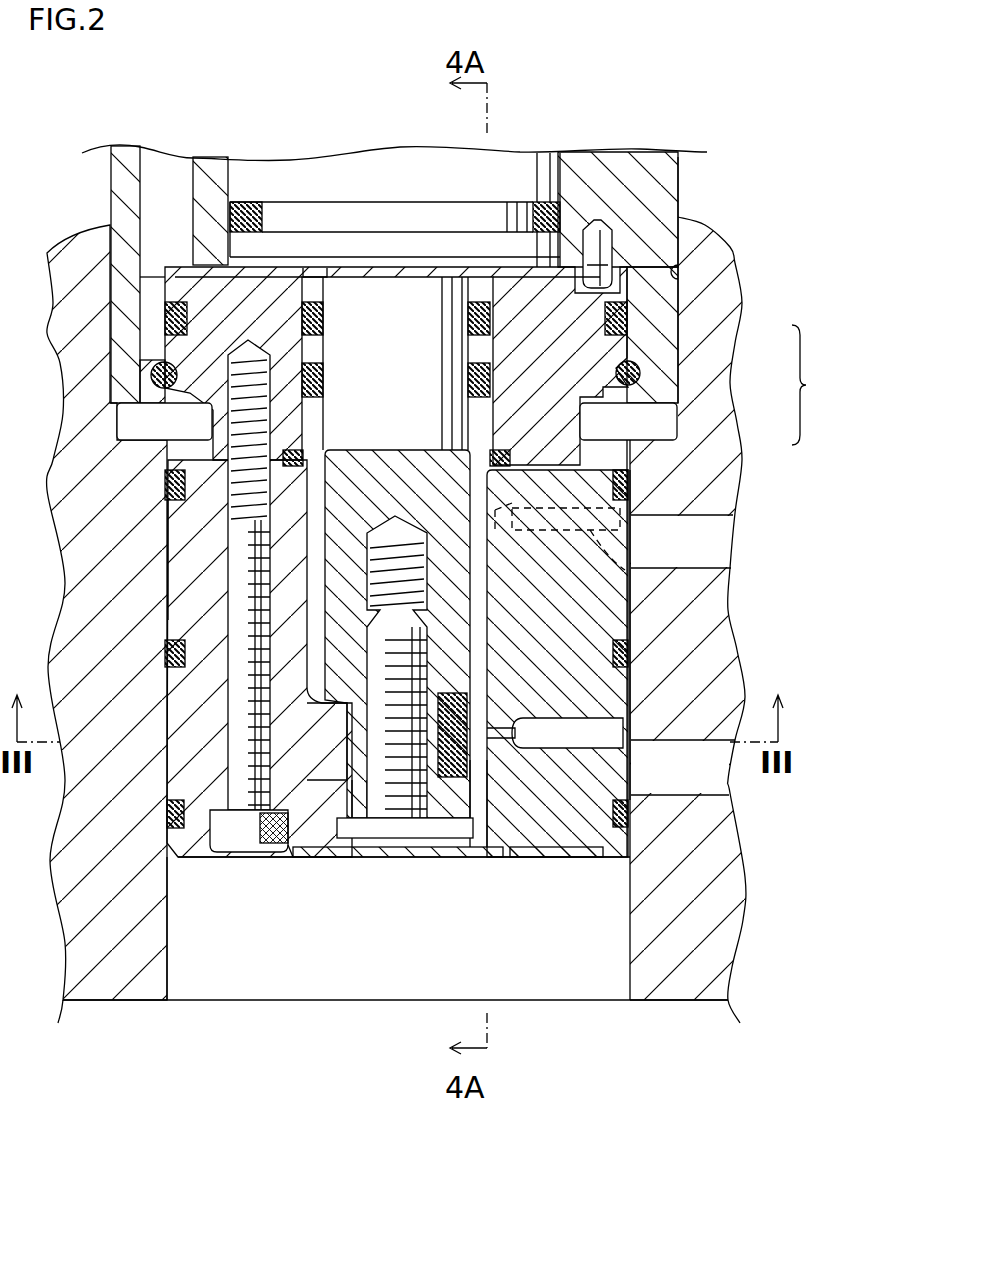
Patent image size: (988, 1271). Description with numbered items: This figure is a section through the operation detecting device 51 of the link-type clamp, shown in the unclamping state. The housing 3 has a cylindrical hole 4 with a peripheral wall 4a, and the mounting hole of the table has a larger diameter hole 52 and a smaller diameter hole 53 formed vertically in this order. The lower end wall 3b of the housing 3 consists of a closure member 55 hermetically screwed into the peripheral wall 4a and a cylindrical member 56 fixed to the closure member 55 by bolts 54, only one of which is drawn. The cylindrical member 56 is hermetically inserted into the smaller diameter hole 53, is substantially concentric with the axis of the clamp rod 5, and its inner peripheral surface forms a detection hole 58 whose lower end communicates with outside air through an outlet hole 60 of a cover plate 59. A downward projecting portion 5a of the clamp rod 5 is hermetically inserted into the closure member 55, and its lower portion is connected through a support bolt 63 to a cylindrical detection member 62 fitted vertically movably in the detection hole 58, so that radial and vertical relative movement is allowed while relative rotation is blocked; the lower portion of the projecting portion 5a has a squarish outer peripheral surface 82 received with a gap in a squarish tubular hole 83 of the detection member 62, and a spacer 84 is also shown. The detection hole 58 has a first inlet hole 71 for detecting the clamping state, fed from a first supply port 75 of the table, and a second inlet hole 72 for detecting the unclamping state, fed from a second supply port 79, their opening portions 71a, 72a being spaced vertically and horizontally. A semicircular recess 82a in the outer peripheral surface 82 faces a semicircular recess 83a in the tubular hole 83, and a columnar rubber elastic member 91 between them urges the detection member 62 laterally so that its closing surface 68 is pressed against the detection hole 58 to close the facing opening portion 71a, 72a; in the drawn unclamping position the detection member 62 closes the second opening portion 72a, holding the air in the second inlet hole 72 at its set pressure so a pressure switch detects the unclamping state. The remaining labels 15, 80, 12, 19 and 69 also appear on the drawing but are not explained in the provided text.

The housing 3 is at (700, 178).
The cylindrical hole 4 is at (546, 162).
The peripheral wall 4a is at (650, 235).
The plate member 15 is at (318, 162).
The pin 80 is at (598, 216).
The larger diameter hole 52 is at (668, 276).
The cap 12 is at (455, 342).
The top surface 19 is at (303, 270).
The clamp rod 5 is at (443, 375).
The closure member 55 is at (622, 338).
The lower end wall 3b is at (498, 385).
The cylindrical member 56 is at (690, 425).
The squarish shaped outer peripheral surface 82 is at (305, 727).
The squarish shaped tubular hole 83 is at (345, 760).
The projecting portion 5a is at (475, 632).
The elastic member 91 is at (462, 690).
The closing surface 68 is at (485, 713).
The detection hole 58 is at (492, 572).
The opening portion 71a is at (500, 492).
The first inlet hole 71 is at (632, 592).
The second inlet hole 72 is at (633, 705).
The second opening portion 72a is at (480, 762).
The recess 82a is at (633, 655).
The semicircular recess 83a is at (633, 810).
The channel 69 is at (485, 806).
The first supply port 75 is at (715, 542).
The second supply port 79 is at (705, 775).
The support bolt 63 is at (425, 840).
The spacer 84 is at (318, 858).
The bolt 54 is at (237, 845).
The cover plate 59 is at (295, 852).
The detection member 62 is at (533, 858).
The outlet hole 60 is at (393, 893).
The operation detecting device 51 is at (370, 905).
The smaller diameter hole 53 is at (633, 958).